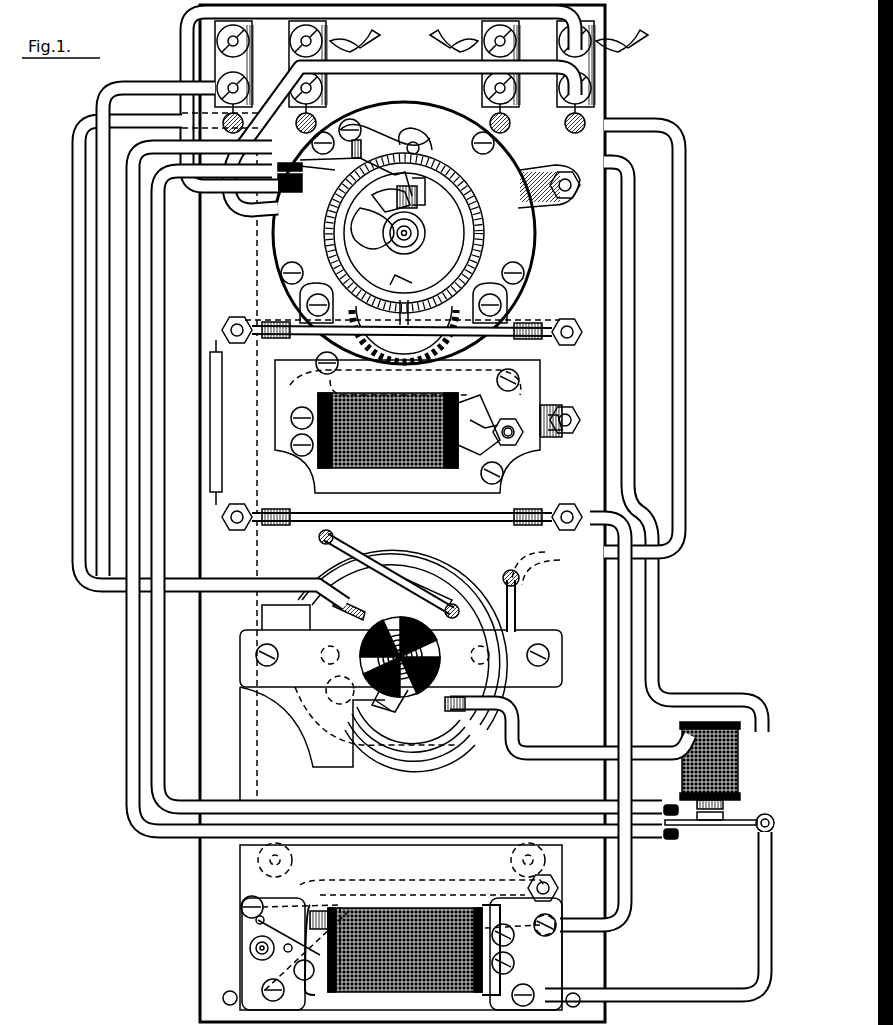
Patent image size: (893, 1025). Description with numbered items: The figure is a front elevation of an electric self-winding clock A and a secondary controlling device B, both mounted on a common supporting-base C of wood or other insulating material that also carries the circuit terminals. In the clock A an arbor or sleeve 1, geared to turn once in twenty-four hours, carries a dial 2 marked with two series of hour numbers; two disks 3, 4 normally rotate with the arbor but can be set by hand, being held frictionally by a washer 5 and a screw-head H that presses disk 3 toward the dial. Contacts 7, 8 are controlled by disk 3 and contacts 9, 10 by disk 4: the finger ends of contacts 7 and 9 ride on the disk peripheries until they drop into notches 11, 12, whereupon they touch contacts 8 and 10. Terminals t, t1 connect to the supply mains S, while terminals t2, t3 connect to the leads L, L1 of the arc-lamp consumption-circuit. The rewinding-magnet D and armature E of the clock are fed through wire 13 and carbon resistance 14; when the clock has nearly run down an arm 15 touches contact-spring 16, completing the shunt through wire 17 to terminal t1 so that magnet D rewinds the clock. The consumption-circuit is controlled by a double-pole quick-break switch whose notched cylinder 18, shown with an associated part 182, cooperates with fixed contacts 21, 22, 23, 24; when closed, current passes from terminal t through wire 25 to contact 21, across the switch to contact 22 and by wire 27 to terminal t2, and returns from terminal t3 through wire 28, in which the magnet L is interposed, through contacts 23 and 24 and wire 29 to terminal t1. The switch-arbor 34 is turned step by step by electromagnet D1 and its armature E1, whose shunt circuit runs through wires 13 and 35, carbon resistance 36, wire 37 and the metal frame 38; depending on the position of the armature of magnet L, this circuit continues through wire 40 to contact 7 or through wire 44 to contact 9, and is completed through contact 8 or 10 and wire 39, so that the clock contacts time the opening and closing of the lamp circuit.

The arbor or sleeve 1 is at (420, 235).
The dial 2 is at (470, 208).
The disk 3 is at (404, 233).
The disk 4 is at (404, 315).
The washer 5 is at (185, 35).
The contact 7 is at (432, 148).
The contact 8 is at (305, 177).
The contact 9 is at (384, 130).
The contact 10 is at (335, 160).
The notch 11 is at (405, 184).
The notch 12 is at (396, 277).
The wire 13 is at (104, 262).
The carbon resistance 14 is at (522, 330).
The arm 15 is at (418, 195).
The contact-spring 16 is at (389, 205).
The wire 17 is at (402, 138).
The switch-cylinder 18 is at (404, 668).
The ratchet wheel 182 is at (400, 640).
The fixed contact 21 is at (229, 370).
The fixed contact 22 is at (440, 588).
The fixed contact 23 is at (380, 720).
The fixed contact 24 is at (405, 700).
The wire 25 is at (75, 468).
The wire 27 is at (360, 548).
The wire 28 is at (628, 402).
The wire 29 is at (686, 462).
The switch-arbor 34 is at (425, 660).
The wire 35 is at (210, 432).
The carbon resistance 36 is at (410, 515).
The wire 37 is at (622, 668).
The metal frame 38 is at (542, 943).
The wire 39 is at (184, 62).
The wire 40 is at (520, 812).
The wire 44 is at (430, 838).
The electric self-winding clock A is at (412, 233).
The secondary controlling device B is at (401, 702).
The supporting-base C is at (541, 576).
The magnet D is at (407, 422).
The electromagnet D1 is at (392, 928).
The armature E is at (468, 400).
The armature E1 is at (295, 956).
The screw-head H is at (388, 245).
The consumption-circuit lead / controlling magnet L is at (543, 427).
The consumption-circuit lead L1 is at (445, 41).
The main S is at (624, 41).
The terminal t is at (765, 823).
The terminal t1 is at (617, 409).
The terminal t2 is at (317, 74).
The terminal t3 is at (570, 439).